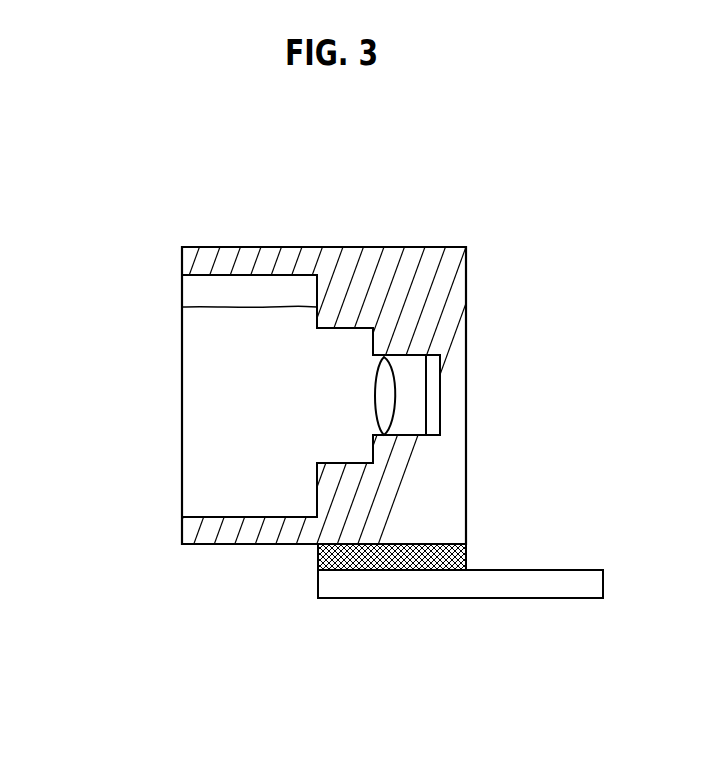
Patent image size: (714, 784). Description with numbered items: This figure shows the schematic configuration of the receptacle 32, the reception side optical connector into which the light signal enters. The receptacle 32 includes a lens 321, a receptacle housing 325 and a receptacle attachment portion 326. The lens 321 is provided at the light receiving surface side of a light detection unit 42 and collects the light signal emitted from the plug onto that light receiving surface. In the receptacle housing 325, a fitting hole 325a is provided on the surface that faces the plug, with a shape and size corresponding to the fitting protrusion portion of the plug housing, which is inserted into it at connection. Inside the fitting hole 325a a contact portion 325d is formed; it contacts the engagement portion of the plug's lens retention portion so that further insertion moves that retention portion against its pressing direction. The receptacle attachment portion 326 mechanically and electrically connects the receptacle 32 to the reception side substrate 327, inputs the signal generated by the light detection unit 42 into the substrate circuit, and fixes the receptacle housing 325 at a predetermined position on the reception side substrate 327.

The receptacle 32 is at (390, 734).
The receptacle housing 325 is at (232, 228).
The fitting hole 325a is at (196, 291).
The contact portion 325d is at (182, 307).
The lens 321 is at (384, 393).
The light detection unit 42 is at (432, 397).
The receptacle attachment portion 326 is at (316, 557).
The reception side substrate 327 is at (537, 568).